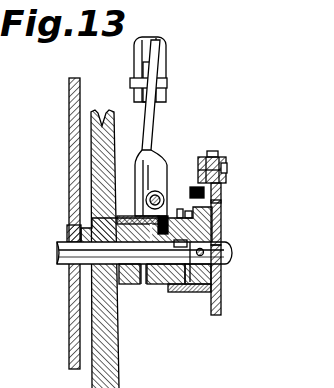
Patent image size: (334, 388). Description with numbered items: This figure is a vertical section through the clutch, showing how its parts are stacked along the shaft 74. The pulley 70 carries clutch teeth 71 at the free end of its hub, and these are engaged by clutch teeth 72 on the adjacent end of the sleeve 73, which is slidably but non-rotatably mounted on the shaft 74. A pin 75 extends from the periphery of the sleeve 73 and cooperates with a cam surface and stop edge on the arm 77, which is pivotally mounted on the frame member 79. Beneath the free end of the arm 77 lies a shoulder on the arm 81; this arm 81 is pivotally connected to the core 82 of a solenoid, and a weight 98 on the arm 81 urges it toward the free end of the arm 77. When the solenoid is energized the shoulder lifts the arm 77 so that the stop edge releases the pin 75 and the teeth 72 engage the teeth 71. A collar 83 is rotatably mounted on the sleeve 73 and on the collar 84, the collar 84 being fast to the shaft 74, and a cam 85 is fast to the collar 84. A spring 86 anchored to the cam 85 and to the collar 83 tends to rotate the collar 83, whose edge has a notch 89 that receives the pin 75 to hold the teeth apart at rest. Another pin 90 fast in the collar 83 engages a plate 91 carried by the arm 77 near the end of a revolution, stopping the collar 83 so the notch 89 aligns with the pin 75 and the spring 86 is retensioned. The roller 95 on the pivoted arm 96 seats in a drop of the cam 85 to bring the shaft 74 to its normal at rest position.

The pulley 70 is at (120, 352).
The clutch teeth 71 is at (135, 284).
The clutch teeth 72 is at (131, 284).
The sleeve 73 is at (163, 285).
The shaft 74 is at (234, 252).
The pin 75 is at (158, 238).
The arm 77 is at (110, 222).
The frame member 79 is at (69, 189).
The arm 81 is at (158, 118).
The core 82 is at (156, 53).
The collar 83 is at (220, 213).
The collar 84 is at (222, 234).
The cam 85 is at (222, 306).
The spring 86 is at (223, 189).
The notch 89 is at (185, 205).
The pin 90 is at (210, 196).
The plate 91 is at (148, 208).
The roller 95 is at (225, 157).
The arm 96 is at (205, 148).
The weight 98 is at (148, 192).